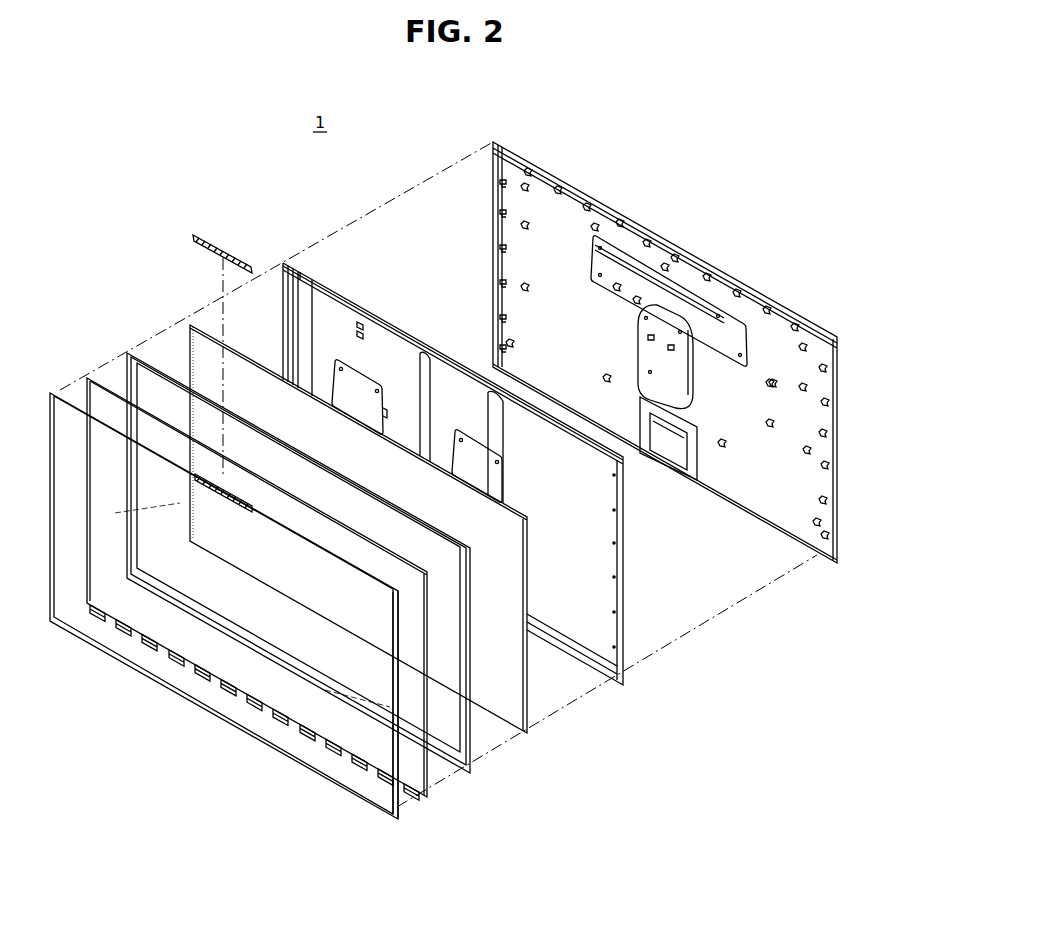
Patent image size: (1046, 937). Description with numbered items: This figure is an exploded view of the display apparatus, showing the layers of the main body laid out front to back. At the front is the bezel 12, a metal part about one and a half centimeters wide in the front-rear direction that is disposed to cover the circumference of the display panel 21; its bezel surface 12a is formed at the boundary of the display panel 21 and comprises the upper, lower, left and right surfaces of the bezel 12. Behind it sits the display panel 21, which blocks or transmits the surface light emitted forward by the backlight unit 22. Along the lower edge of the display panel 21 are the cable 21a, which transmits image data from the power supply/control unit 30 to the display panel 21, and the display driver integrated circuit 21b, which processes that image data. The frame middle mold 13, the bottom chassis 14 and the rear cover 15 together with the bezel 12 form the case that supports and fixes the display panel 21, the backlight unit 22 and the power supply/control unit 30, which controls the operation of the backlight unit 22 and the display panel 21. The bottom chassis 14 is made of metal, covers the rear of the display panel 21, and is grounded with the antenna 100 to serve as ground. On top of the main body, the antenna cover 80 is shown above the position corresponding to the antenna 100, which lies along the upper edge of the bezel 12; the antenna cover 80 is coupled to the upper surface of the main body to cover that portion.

The antenna cover 80 is at (231, 244).
The antenna 100 is at (196, 486).
The bezel 12 is at (262, 764).
The bezel surface 12a is at (396, 803).
The display panel 21 is at (424, 766).
The cable 21a is at (192, 668).
The display driver integrated circuit 21b is at (204, 668).
The frame middle mold 13 is at (470, 752).
The backlight unit 22 is at (528, 716).
The bottom chassis 14 is at (625, 657).
The power supply/control unit 30 is at (366, 386).
The rear cover 15 is at (815, 556).